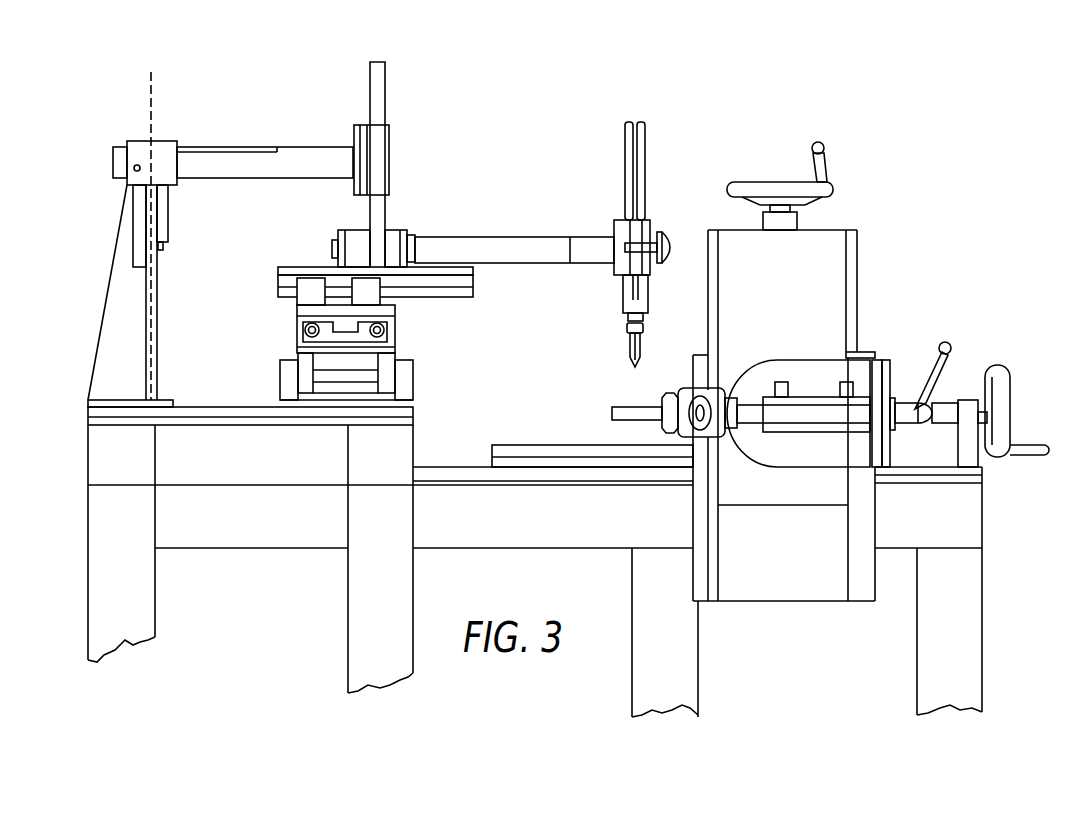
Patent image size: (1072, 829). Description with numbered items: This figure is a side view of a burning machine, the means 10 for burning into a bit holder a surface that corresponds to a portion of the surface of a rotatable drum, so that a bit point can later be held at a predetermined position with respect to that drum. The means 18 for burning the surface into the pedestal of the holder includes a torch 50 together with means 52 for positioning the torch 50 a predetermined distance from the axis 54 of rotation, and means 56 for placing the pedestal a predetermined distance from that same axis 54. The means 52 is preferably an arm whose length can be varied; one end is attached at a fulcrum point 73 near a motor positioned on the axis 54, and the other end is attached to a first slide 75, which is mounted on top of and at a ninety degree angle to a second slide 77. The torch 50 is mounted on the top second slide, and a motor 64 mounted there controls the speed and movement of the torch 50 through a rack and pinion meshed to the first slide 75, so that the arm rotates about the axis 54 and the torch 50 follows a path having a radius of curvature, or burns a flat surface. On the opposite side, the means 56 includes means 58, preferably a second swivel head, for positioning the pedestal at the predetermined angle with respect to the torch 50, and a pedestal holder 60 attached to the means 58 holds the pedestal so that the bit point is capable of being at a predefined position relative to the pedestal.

The means for burning into the holder a surface 10 is at (858, 150).
The means for burning into the pedestal the surface 18 is at (615, 202).
The torch 50 is at (645, 150).
The means for positioning the torch 52 is at (307, 165).
The axis of rotation 54 is at (150, 112).
The means for placing the pedestal 56 is at (947, 410).
The means for positioning the pedestal at the predetermined angle 58 is at (857, 372).
The pedestal holder 60 is at (733, 392).
The motor 64 is at (168, 205).
The fulcrum point 73 is at (163, 152).
The first slide 75 is at (398, 230).
The second slide 77 is at (385, 88).